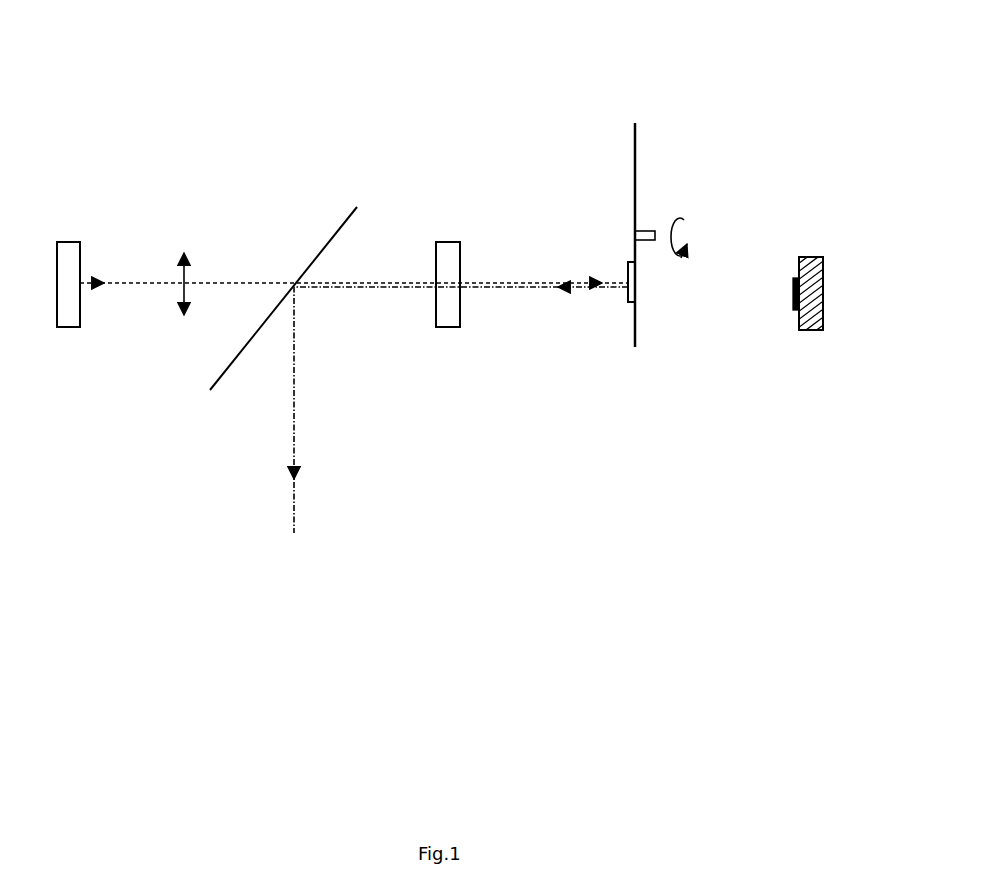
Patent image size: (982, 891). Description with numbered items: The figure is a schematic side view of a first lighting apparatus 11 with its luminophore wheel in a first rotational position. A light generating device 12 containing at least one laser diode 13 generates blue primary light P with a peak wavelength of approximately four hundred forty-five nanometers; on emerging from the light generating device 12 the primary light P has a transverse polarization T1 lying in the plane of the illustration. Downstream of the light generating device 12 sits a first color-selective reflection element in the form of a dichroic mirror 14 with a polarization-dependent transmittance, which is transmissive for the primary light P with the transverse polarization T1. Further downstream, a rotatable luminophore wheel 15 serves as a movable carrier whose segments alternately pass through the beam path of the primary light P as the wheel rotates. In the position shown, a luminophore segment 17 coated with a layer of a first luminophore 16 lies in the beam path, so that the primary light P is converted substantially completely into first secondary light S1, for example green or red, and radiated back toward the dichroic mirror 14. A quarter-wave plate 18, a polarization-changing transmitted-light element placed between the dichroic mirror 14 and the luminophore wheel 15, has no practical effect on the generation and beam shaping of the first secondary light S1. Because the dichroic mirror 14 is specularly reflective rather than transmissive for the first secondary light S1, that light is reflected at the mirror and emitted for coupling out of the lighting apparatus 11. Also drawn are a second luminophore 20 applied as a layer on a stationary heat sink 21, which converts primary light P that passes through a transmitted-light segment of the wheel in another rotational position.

The lighting apparatus 11 is at (334, 98).
The light generating device 12 is at (74, 256).
The laser diode 13 is at (66, 262).
The dichroic mirror 14 is at (345, 215).
The luminophore wheel 15 is at (636, 150).
The first luminophore 16 is at (674, 299).
The luminophore segment 17 is at (636, 300).
The quarter-wave plate 18 is at (447, 330).
The second luminophore 20 is at (793, 295).
The heat sink 21 is at (813, 257).
The primary light P is at (135, 288).
The transverse polarization T1 is at (188, 268).
The first secondary light S1 is at (294, 413).